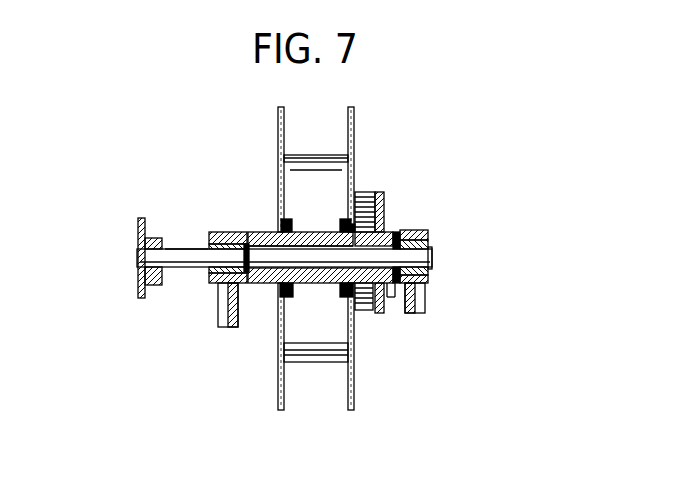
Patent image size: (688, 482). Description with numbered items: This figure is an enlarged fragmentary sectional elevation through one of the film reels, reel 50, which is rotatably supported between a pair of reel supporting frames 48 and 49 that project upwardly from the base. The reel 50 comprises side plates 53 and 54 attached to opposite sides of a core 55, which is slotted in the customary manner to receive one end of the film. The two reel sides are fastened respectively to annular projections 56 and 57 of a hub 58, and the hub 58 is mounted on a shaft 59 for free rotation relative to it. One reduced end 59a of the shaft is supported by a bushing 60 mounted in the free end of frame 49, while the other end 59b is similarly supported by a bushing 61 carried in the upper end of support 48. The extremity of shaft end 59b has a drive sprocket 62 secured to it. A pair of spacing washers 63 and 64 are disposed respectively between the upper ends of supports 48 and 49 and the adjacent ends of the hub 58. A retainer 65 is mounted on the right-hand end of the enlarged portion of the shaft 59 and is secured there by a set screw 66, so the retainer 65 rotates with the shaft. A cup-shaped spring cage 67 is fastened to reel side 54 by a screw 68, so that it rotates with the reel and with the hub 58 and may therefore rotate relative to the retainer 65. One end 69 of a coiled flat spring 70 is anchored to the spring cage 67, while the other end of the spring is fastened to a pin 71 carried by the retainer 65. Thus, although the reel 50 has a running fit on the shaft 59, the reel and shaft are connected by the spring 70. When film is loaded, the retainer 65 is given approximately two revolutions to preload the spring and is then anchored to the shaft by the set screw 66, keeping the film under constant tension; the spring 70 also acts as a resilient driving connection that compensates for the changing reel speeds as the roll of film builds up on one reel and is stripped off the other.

The reel supporting frame 48 is at (216, 320).
The reel supporting frame 49 is at (421, 305).
The film reel 50 is at (333, 106).
The side plate 53 is at (278, 140).
The side plate 54 is at (353, 135).
The core 55 is at (303, 157).
The annular projection 56 is at (285, 219).
The annular projection 57 is at (340, 218).
The hub 58 is at (263, 249).
The shaft 59 is at (243, 235).
The reduced end of shaft 59a is at (429, 248).
The shaft end 59b is at (190, 249).
The bushing 60 is at (432, 265).
The bushing 61 is at (210, 268).
The drive sprocket 62 is at (150, 283).
The spacing washer 63 is at (245, 285).
The spacing washer 64 is at (395, 284).
The retainer 65 is at (384, 230).
The set screw 66 is at (389, 285).
The spring cage 67 is at (367, 312).
The screw 68 is at (342, 225).
The end of spring 69 is at (366, 194).
The coiled flat spring 70 is at (381, 205).
The pin 71 is at (397, 232).